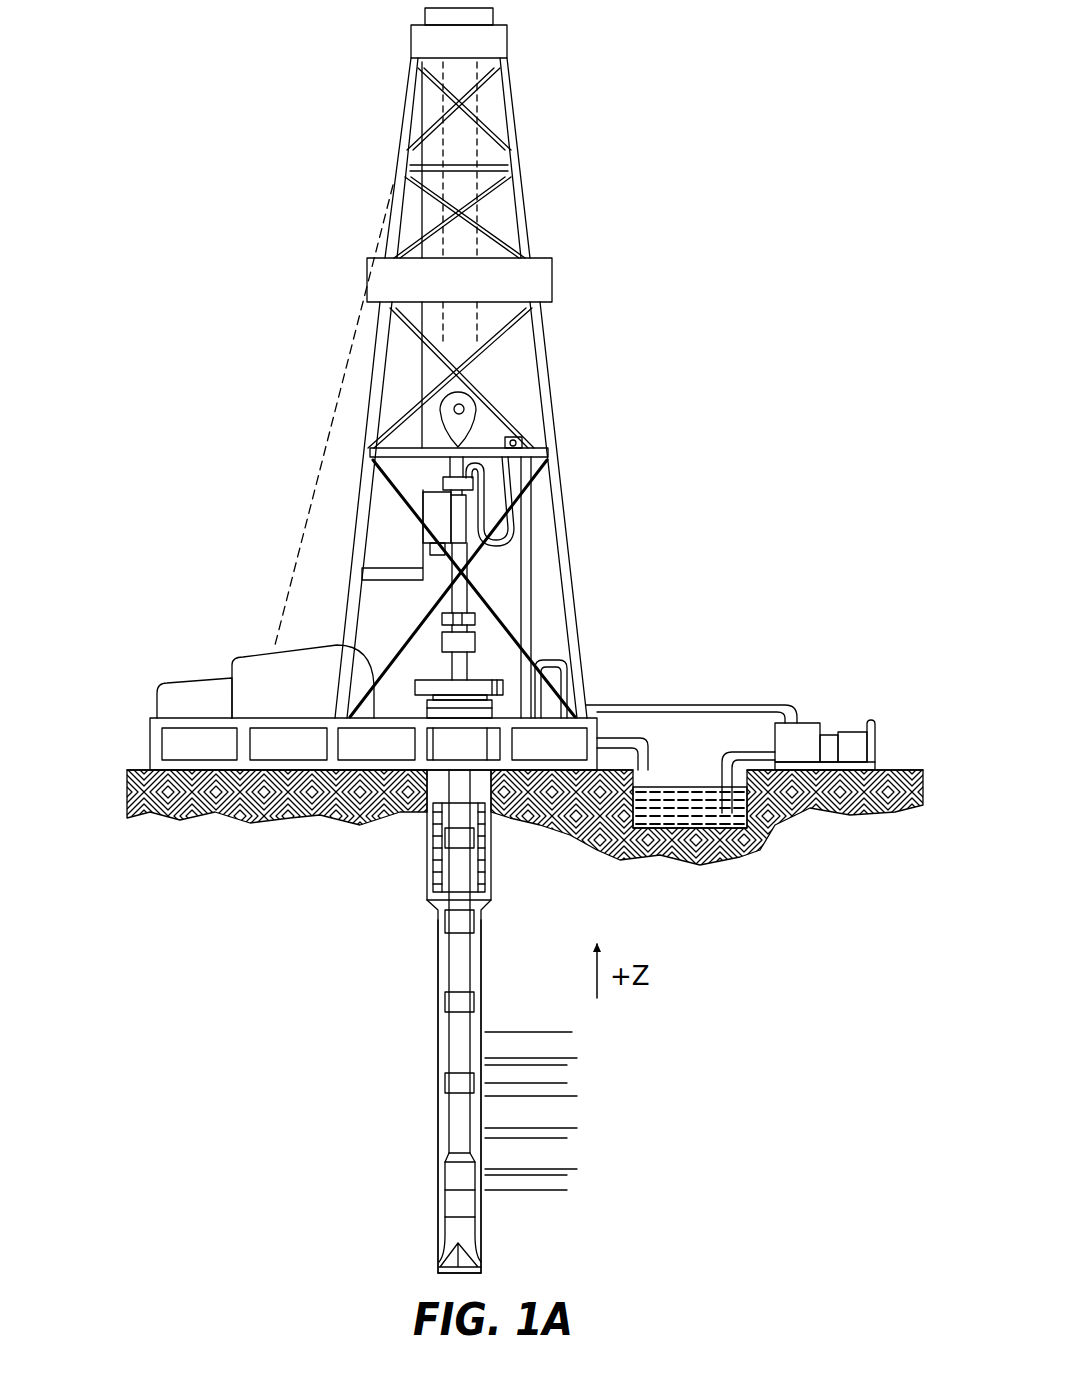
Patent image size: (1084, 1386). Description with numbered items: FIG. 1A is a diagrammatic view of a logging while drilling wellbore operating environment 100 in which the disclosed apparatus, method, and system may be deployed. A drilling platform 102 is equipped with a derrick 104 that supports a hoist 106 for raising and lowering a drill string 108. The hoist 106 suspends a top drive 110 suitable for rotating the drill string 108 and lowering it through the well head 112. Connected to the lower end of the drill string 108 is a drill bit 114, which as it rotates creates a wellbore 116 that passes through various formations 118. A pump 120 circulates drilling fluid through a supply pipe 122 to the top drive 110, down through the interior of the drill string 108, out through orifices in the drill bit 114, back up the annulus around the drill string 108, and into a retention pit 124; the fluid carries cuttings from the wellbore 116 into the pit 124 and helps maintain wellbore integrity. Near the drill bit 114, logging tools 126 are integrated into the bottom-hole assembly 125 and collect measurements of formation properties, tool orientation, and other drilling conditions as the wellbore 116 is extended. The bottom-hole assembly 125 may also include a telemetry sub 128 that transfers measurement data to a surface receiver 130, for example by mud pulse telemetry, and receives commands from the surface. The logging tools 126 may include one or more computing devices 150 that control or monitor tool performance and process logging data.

The logging while drilling wellbore operating environment 100 is at (326, 68).
The drilling platform 102 is at (150, 740).
The derrick 104 is at (522, 207).
The hoist 106 is at (480, 415).
The drill string 108 is at (468, 963).
The top drive 110 is at (465, 503).
The well head 112 is at (480, 678).
The drill bit 114 is at (470, 1257).
The wellbore 116 is at (480, 988).
The formations 118 is at (582, 1027).
The pump 120 is at (806, 735).
The supply pipe 122 is at (686, 707).
The retention pit 124 is at (683, 822).
The bottom-hole assembly 125 is at (389, 1180).
The logging tools 126 is at (448, 1202).
The telemetry sub 128 is at (448, 1172).
The surface receiver 130 is at (477, 618).
The computing device 150 is at (457, 1212).